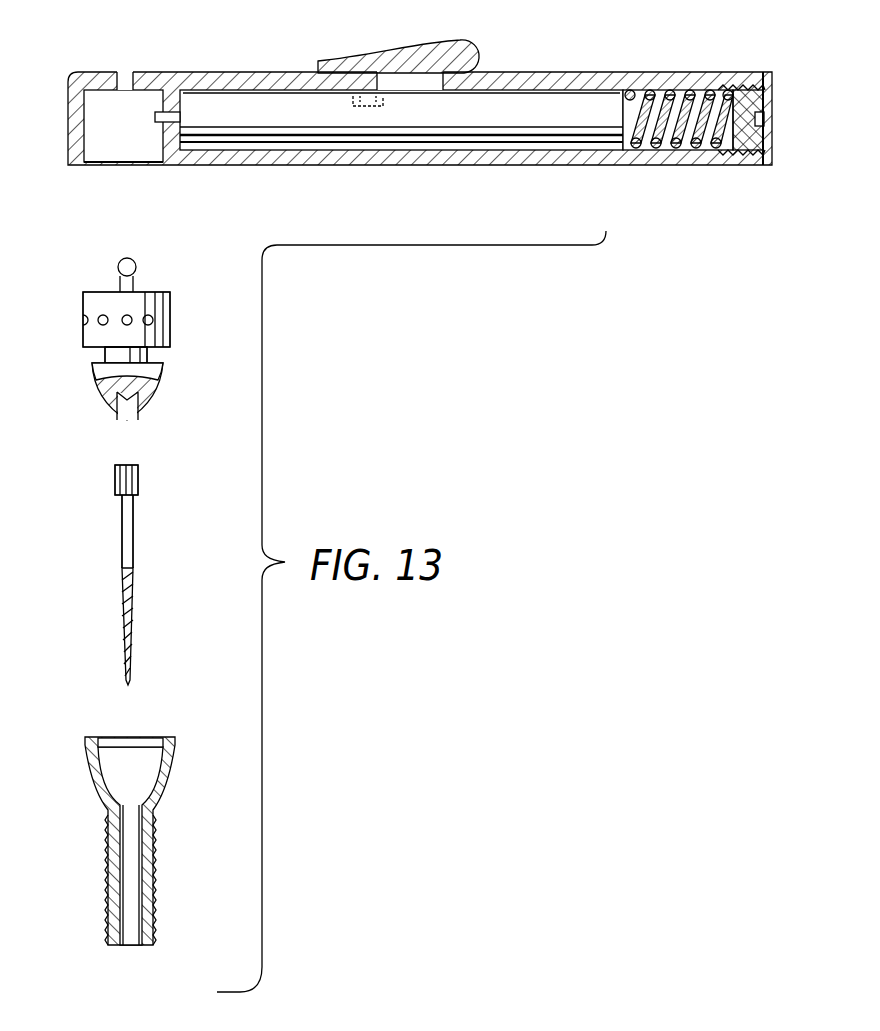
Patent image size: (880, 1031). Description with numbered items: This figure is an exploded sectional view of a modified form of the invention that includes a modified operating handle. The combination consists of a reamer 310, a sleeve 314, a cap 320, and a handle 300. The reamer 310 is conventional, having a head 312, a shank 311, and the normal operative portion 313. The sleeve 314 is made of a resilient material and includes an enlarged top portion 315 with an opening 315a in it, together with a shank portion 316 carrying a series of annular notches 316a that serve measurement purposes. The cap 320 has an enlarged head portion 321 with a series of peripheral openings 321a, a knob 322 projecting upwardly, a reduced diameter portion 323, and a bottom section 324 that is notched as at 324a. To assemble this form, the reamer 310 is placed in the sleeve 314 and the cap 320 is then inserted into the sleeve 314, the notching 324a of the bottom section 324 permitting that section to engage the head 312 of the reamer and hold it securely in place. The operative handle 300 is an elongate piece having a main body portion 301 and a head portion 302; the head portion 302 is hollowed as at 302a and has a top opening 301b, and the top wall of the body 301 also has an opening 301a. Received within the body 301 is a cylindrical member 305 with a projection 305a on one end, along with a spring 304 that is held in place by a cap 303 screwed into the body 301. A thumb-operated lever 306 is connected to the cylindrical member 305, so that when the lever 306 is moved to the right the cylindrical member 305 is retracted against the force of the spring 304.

The handle 300 is at (602, 60).
The main body portion 301 is at (600, 165).
The opening 301a is at (436, 78).
The top opening 301b is at (125, 74).
The head portion 302 is at (67, 128).
The hollow 302a is at (100, 158).
The cap 303 is at (750, 137).
The spring 304 is at (700, 148).
The cylindrical member 305 is at (441, 130).
The projection 305a is at (155, 124).
The thumb-operated lever 306 is at (440, 62).
The reamer 310 is at (156, 528).
The shank 311 is at (133, 560).
The head 312 is at (138, 480).
The operative portion 313 is at (135, 638).
The sleeve 314 is at (180, 768).
The enlarged top portion 315 is at (170, 792).
The opening 315a is at (143, 740).
The shank portion 316 is at (153, 866).
The annular notches 316a is at (153, 918).
The cap 320 is at (178, 347).
The enlarged head portion 321 is at (170, 300).
The peripheral openings 321a is at (170, 322).
The knob 322 is at (136, 260).
The reduced diameter portion 323 is at (150, 360).
The bottom section 324 is at (160, 376).
The notch 324a is at (120, 414).